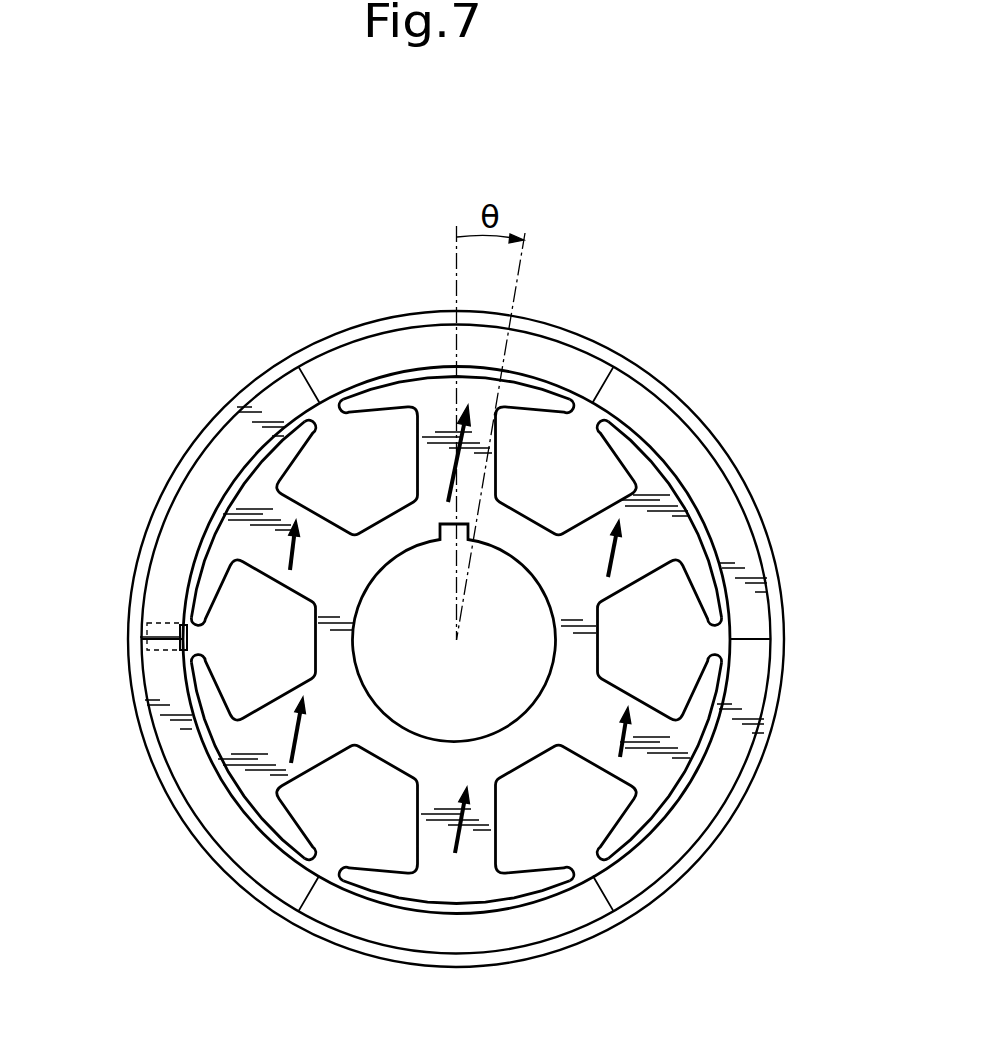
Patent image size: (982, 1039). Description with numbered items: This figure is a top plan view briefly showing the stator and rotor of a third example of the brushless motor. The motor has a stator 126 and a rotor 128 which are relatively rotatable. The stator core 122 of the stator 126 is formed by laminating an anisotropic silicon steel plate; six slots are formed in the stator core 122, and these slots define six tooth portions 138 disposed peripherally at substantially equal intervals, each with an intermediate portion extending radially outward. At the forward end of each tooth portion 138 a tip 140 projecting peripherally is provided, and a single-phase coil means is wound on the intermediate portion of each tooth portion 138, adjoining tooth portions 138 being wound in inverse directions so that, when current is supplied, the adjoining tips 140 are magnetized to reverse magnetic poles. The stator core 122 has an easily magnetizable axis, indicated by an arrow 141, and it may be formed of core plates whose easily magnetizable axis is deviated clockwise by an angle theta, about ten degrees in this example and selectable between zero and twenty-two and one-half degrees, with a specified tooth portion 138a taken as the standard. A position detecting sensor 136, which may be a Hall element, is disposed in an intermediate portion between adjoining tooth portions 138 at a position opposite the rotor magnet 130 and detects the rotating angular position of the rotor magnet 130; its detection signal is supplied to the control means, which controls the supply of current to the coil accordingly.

The stator core 122 is at (538, 753).
The stator 126 is at (722, 682).
The rotor 128 is at (176, 472).
The rotor magnet 130 is at (268, 872).
The position detecting sensor 136 is at (150, 620).
The tooth portion 138 is at (418, 472).
The specified tooth portion 138a is at (574, 410).
The tip 140 is at (642, 448).
The magnetization direction arrows 141 is at (450, 475).